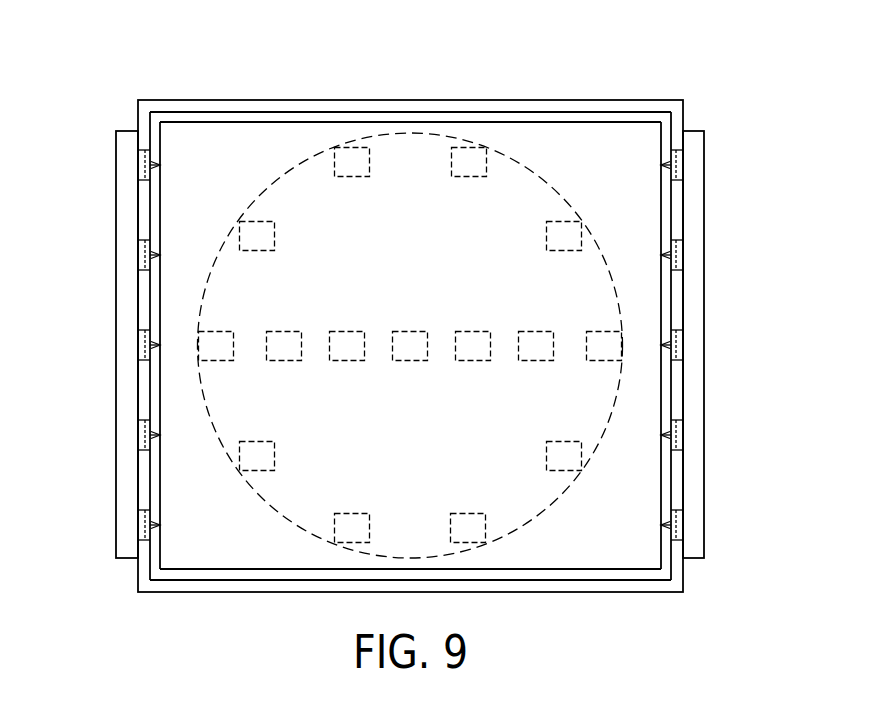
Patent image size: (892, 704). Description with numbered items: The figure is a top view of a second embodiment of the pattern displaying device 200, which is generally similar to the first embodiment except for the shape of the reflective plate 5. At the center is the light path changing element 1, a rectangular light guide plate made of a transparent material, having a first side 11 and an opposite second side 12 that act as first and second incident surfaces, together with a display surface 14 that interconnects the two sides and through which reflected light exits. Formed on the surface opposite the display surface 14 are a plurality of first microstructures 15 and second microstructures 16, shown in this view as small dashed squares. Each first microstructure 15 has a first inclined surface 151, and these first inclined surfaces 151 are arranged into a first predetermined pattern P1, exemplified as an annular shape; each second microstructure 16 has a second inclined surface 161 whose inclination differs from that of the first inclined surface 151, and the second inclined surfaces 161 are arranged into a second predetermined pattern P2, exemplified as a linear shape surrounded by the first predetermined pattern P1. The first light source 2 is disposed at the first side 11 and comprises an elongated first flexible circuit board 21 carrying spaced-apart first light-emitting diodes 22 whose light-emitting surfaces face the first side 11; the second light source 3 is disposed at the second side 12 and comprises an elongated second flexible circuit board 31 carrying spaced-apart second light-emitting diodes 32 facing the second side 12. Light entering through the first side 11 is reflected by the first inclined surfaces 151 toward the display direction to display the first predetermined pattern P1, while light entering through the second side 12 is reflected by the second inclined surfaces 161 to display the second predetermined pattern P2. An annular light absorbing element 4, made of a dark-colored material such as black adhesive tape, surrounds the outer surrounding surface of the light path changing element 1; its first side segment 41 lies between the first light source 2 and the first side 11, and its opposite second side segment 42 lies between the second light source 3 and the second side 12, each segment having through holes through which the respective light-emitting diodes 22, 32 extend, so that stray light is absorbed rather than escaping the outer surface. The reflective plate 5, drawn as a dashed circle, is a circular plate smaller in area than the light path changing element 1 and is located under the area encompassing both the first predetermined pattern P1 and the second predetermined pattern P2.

The pattern displaying device 200 is at (76, 63).
The light path changing element 1 is at (418, 303).
The first side 11 is at (660, 482).
The second side 12 is at (160, 479).
The display surface 14 is at (418, 311).
The first microstructures 15 is at (414, 341).
The first inclined surface 151 is at (575, 233).
The second microstructures 16 is at (173, 342).
The second inclined surface 161 is at (278, 349).
The first light source 2 is at (723, 344).
The first flexible circuit board 21 is at (700, 394).
The first light-emitting diodes 22 is at (678, 432).
The second light source 3 is at (105, 344).
The second flexible circuit board 31 is at (128, 207).
The second light-emitting diodes 32 is at (146, 255).
The light absorbing element 4 is at (409, 297).
The first side segment 41 is at (675, 146).
The second side segment 42 is at (146, 140).
The reflective plate 5 is at (540, 186).
The first predetermined pattern P1 is at (485, 148).
The second predetermined pattern P2 is at (557, 329).